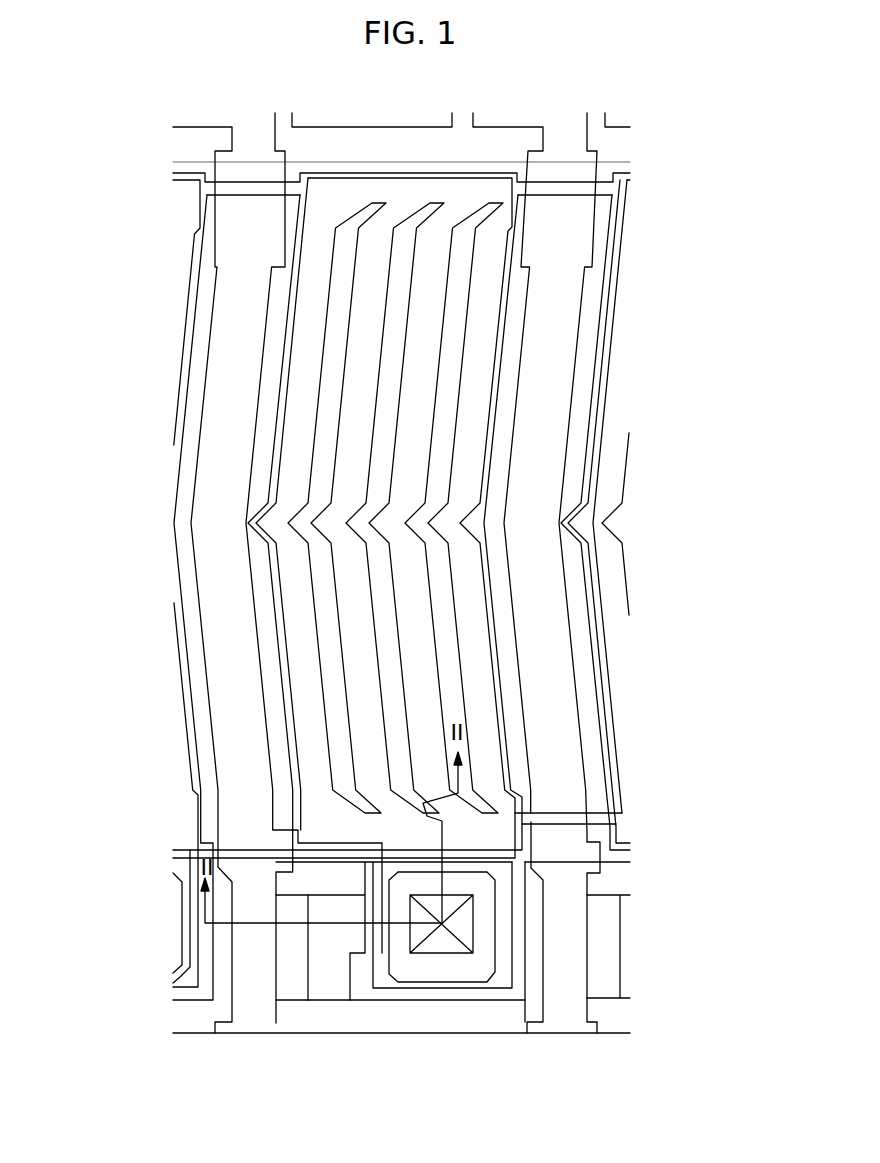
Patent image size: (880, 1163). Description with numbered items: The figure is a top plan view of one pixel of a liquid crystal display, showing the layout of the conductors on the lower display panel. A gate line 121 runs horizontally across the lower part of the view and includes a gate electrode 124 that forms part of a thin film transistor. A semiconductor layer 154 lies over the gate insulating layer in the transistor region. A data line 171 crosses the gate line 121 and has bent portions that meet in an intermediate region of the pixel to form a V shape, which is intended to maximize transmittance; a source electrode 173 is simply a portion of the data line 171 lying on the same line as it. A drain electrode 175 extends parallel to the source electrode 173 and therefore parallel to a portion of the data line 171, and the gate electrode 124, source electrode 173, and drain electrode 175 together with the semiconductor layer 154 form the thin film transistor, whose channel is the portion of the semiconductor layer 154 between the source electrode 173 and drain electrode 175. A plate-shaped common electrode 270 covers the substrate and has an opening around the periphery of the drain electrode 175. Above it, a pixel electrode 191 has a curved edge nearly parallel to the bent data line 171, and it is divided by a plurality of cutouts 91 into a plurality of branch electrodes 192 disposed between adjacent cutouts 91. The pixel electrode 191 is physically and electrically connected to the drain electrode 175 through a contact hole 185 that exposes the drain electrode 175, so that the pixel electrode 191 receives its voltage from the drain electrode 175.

The cutouts 91 is at (395, 400).
The gate line 121 is at (493, 1000).
The gate electrode 124 is at (213, 960).
The semiconductor layer 154 is at (290, 1003).
The data line 171 is at (195, 563).
The source electrode 173 is at (276, 967).
The drain electrode 175 is at (357, 1000).
The contact hole 185 is at (430, 953).
The pixel electrode 191 is at (560, 810).
The branch electrodes 192 is at (410, 668).
The common electrode 270 is at (497, 452).